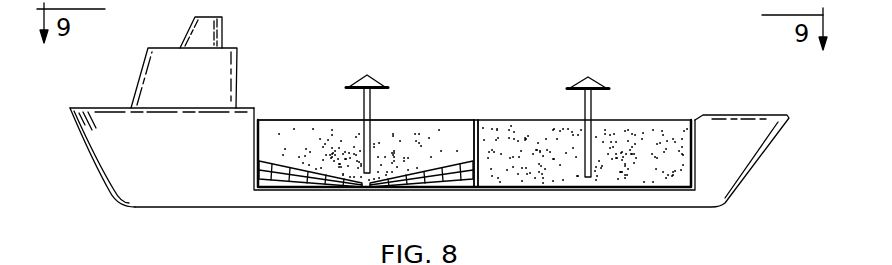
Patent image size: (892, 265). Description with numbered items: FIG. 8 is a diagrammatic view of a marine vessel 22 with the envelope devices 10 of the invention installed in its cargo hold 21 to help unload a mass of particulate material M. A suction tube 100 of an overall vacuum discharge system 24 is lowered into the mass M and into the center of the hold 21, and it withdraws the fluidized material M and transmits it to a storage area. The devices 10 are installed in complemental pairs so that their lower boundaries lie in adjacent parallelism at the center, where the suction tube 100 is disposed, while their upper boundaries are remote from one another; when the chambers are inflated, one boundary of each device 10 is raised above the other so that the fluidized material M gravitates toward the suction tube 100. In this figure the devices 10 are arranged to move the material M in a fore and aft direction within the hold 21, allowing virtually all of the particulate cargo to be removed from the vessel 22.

The barge vessel 10 is at (286, 194).
The cargo hold 21 is at (304, 129).
The vessel 22 is at (124, 171).
The vacuum discharge system 24 is at (378, 110).
The suction tube 100 is at (364, 171).
The mass of particulate material M is at (408, 149).